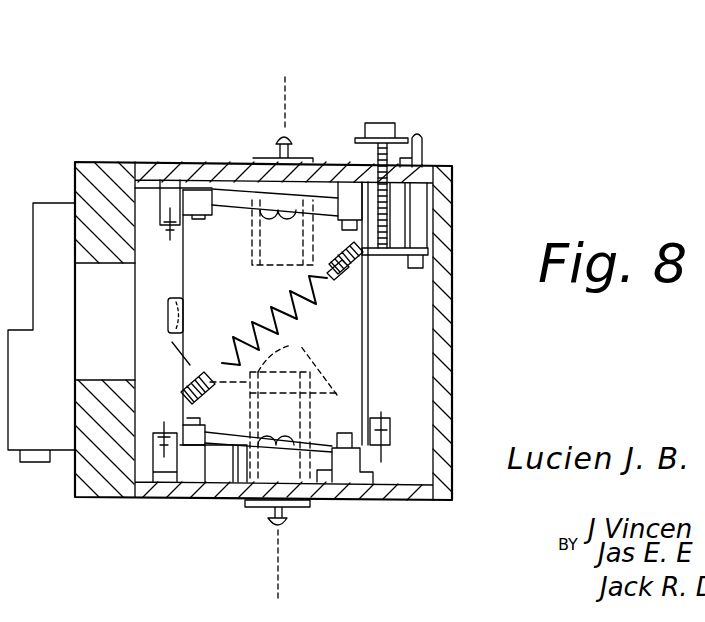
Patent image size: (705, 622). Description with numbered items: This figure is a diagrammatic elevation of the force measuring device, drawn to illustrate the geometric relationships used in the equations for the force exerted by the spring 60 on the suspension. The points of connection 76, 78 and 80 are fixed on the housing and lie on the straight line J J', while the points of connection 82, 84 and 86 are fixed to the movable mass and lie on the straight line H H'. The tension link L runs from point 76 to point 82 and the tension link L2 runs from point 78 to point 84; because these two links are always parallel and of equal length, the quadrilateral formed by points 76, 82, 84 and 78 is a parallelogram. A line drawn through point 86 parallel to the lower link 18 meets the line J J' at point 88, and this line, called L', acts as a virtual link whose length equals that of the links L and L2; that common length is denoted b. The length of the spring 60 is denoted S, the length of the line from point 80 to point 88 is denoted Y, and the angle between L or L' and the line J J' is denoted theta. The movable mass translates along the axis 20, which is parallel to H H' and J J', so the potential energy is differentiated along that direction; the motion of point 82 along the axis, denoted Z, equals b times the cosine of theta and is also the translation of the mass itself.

The lower link 18 is at (262, 195).
The axis 20 is at (287, 100).
The spring 60 is at (288, 330).
The point of connection 76 is at (340, 447).
The point of connection 78 is at (338, 218).
The point of connection 80 is at (333, 277).
The point of connection 82 is at (207, 425).
The point of connection 84 is at (212, 203).
The point of connection 86 is at (203, 370).
The intersection point 88 is at (337, 395).
The spring length S is at (306, 256).
The length of line 80–88 Y is at (373, 272).
The displacement along axis Z is at (146, 443).
The link length b is at (211, 456).
The tension link L is at (242, 536).
The tension link L2 is at (227, 206).
The line HH' H is at (214, 113).
The line JJ' J is at (338, 322).